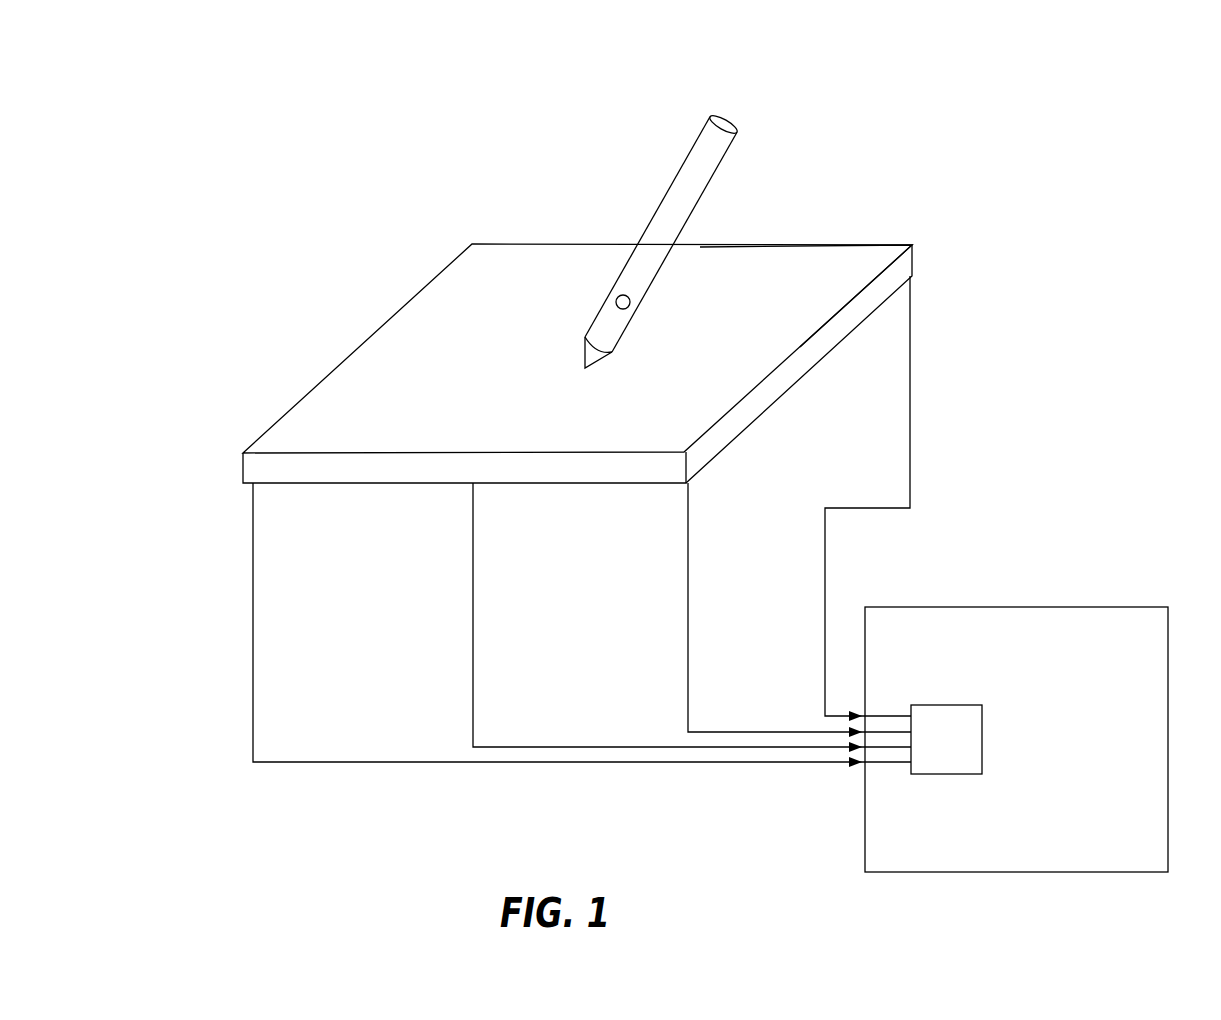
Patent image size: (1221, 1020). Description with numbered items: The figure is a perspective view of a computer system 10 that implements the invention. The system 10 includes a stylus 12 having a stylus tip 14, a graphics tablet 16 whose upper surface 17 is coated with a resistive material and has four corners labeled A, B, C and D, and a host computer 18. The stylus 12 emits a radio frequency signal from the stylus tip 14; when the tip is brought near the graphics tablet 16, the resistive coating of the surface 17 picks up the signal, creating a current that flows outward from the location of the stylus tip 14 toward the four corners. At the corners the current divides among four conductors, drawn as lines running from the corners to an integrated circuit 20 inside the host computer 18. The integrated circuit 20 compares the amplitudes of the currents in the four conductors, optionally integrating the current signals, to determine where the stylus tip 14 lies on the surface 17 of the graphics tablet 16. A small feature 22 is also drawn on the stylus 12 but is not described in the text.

The computer system 10 is at (1018, 109).
The stylus 12 is at (693, 144).
The stylus tip 14 is at (585, 350).
The graphics tablet 16 is at (383, 322).
The upper surface 17 is at (860, 258).
The host computer 18 is at (1098, 607).
The integrated circuit 20 is at (936, 705).
The stylus switch 22 is at (632, 303).